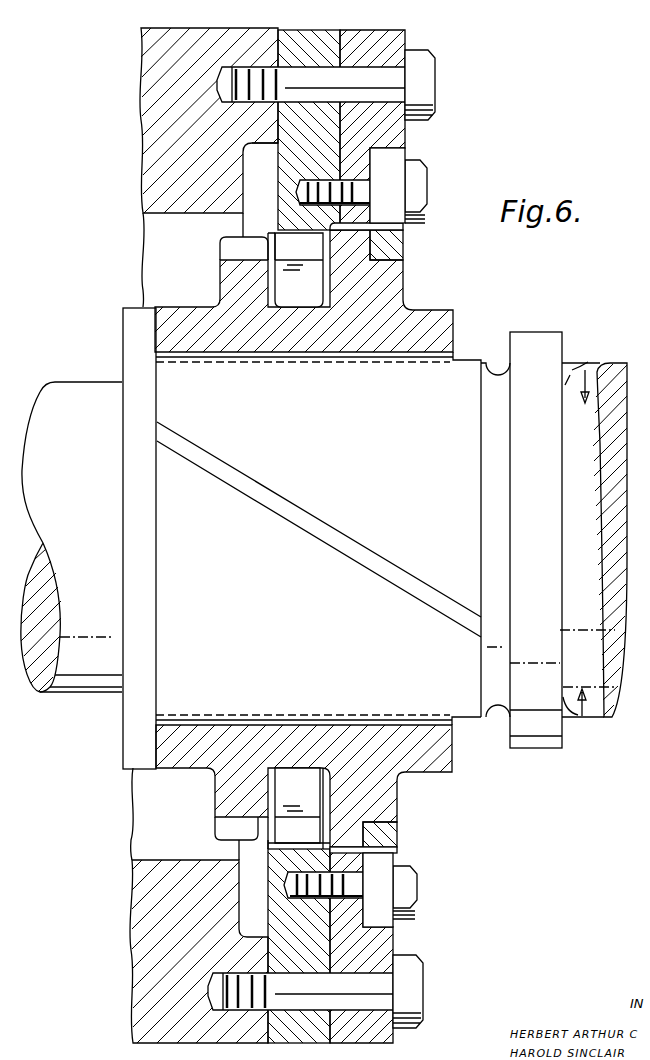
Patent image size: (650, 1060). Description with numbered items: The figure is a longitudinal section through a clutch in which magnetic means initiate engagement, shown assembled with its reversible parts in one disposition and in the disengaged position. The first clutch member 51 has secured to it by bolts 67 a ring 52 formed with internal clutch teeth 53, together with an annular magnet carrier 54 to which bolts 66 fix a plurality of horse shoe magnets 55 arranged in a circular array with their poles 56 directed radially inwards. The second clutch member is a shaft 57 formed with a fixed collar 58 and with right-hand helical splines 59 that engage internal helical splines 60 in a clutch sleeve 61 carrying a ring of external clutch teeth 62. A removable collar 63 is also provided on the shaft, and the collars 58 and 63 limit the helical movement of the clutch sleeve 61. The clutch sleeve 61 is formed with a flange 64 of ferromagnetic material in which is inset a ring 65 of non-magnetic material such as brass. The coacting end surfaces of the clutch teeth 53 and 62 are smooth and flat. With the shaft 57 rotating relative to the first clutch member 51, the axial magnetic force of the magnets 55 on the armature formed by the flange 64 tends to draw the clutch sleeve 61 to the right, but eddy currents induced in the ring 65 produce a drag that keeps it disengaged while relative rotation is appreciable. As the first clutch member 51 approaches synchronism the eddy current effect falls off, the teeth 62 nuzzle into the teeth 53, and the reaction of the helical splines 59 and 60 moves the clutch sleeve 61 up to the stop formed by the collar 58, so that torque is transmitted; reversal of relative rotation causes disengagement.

The first clutch member 51 is at (160, 128).
The ring 52 is at (290, 160).
The internal clutch teeth 53 is at (283, 238).
The annular magnet carrier 54 is at (397, 133).
The horse shoe magnets 55 is at (397, 190).
The poles 56 is at (403, 230).
The shaft 57 is at (583, 375).
The fixed collar 58 is at (549, 511).
The right-hand helical splines 59 is at (465, 362).
The internal helical splines 60 is at (217, 358).
The clutch sleeve 61 is at (307, 342).
The external clutch teeth 62 is at (228, 247).
The removable collar 63 is at (150, 551).
The flange 64 is at (387, 286).
The ring of non-magnetic material 65 is at (390, 252).
The bolts 66 is at (413, 183).
The bolts 67 is at (423, 88).